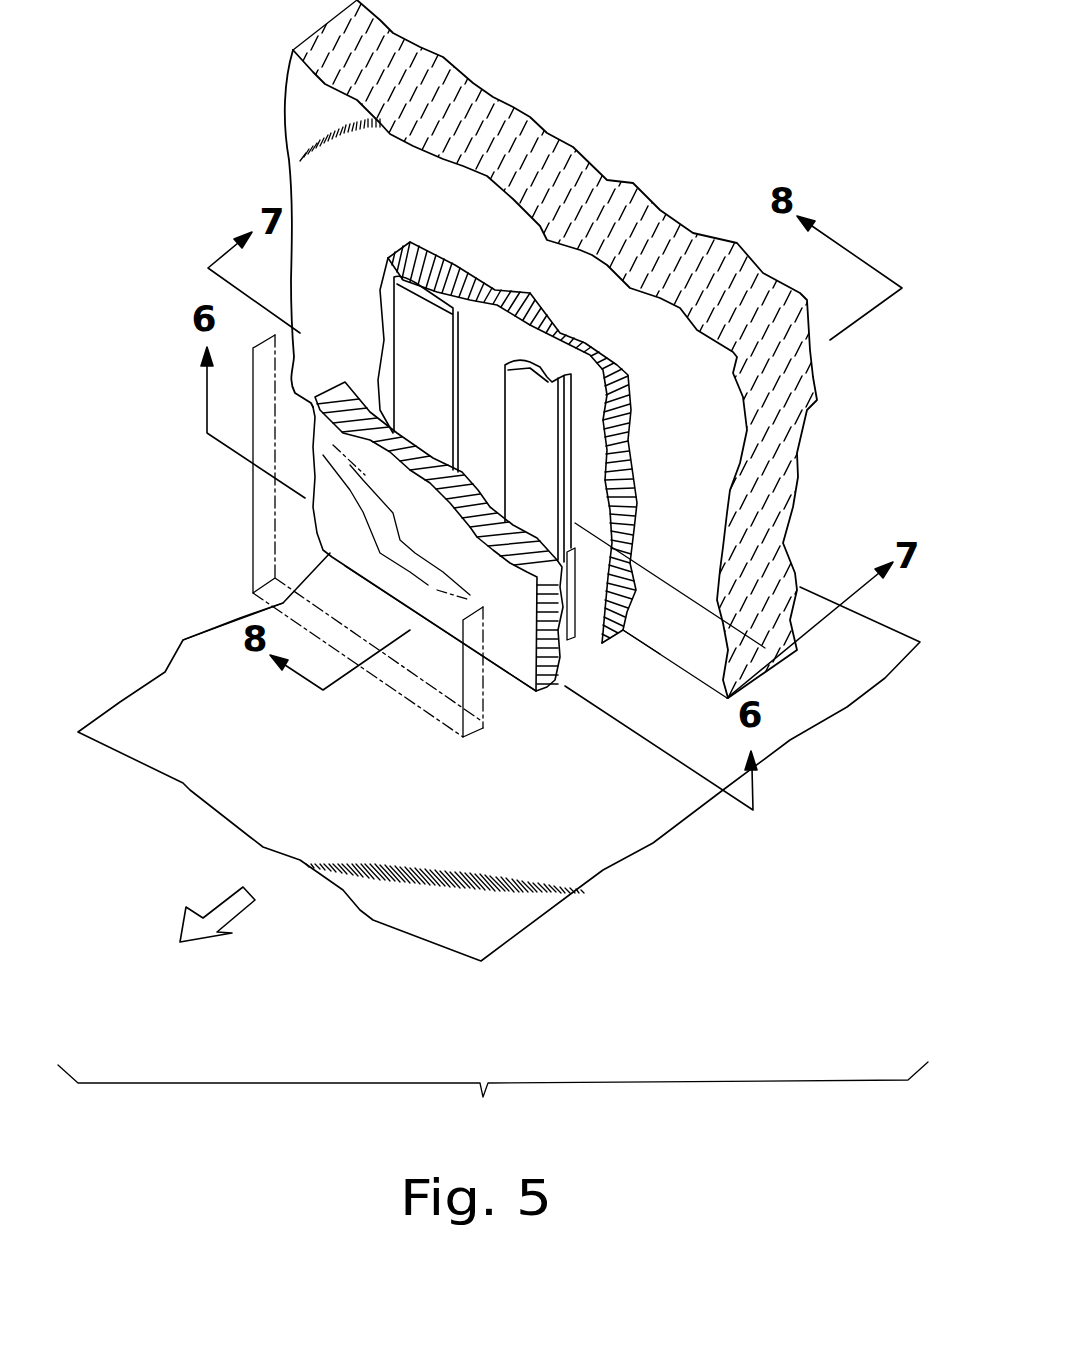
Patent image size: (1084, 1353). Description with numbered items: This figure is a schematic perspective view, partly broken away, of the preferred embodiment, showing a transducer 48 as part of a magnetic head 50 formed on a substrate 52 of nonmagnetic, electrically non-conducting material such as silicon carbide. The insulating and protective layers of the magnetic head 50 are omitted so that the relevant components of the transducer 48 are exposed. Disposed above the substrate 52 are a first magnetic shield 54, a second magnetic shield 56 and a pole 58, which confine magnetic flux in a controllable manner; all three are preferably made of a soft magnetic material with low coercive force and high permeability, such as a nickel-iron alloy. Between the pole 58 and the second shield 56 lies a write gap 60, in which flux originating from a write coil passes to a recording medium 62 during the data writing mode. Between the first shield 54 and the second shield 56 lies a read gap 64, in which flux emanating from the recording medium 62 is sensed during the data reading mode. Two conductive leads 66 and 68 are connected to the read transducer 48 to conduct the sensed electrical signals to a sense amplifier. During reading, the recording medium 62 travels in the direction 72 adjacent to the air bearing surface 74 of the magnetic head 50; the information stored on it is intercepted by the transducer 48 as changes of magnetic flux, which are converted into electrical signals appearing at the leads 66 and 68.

The transducer 48 is at (601, 600).
The magnetic head 50 is at (675, 130).
The substrate 52 is at (288, 97).
The first magnetic shield 54 is at (627, 437).
The second magnetic shield 56 is at (548, 685).
The pole 58 is at (471, 738).
The write gap 60 is at (505, 714).
The recording medium 62 is at (612, 838).
The read gap 64 is at (589, 665).
The conductive lead 66 is at (410, 382).
The conductive lead 68 is at (516, 444).
The direction of travel 72 is at (243, 912).
The air bearing surface 74 is at (273, 617).